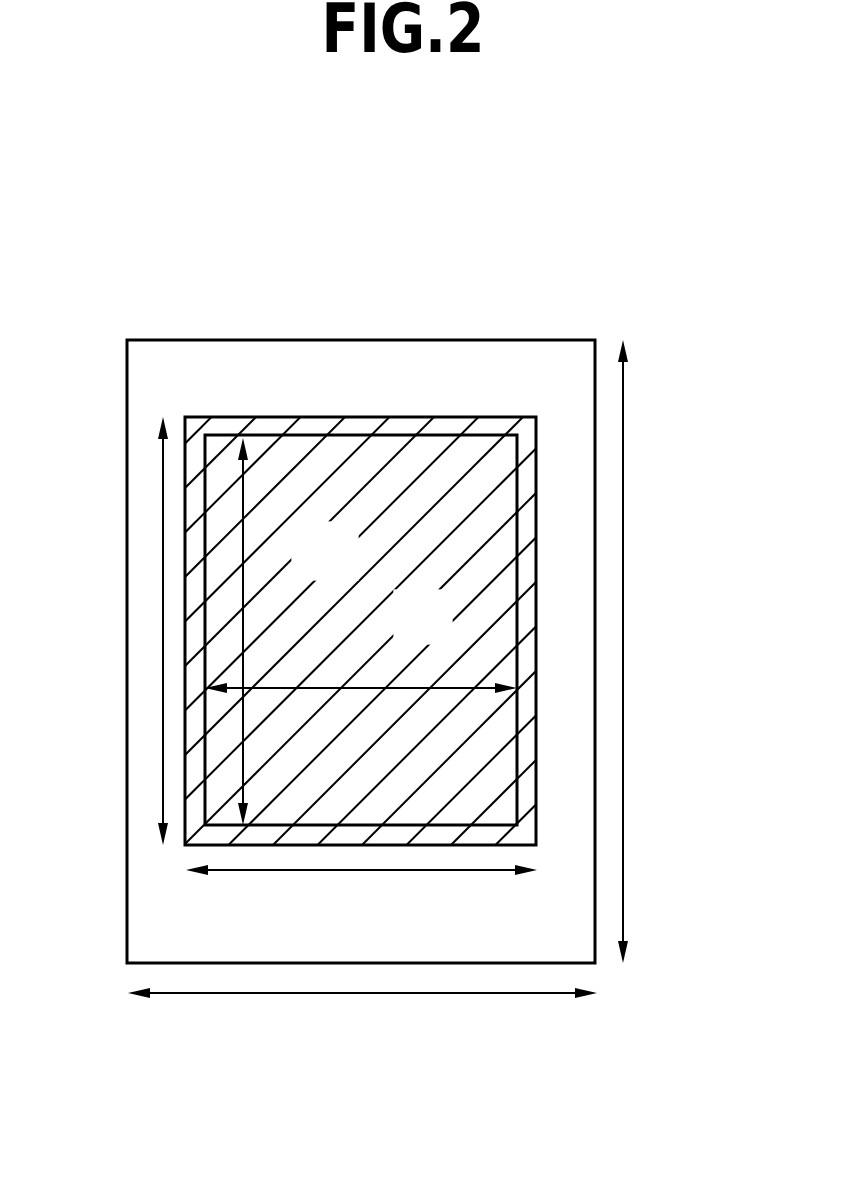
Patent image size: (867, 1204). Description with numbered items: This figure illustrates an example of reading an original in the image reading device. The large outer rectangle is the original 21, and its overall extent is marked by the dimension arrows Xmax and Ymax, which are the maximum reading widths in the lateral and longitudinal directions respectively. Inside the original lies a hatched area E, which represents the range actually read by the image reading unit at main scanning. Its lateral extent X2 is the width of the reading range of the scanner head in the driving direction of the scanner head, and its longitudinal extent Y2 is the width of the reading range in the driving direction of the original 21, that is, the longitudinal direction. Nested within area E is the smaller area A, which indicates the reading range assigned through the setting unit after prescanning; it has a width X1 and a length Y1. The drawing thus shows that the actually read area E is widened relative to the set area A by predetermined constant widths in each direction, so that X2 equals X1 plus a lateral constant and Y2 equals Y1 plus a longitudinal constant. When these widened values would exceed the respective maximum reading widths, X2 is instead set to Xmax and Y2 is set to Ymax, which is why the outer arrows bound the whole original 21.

The original 21 is at (202, 340).
The area A is at (355, 434).
The area E is at (443, 418).
The width of area A X1 is at (424, 688).
The length of area A Y1 is at (243, 580).
The width of reading range of scanner head X2 is at (374, 870).
The width of reading range in longitudinal direction Y2 is at (163, 615).
The maximum reading width in lateral direction Xmax is at (377, 993).
The maximum reading width in longitudinal direction Ymax is at (623, 615).